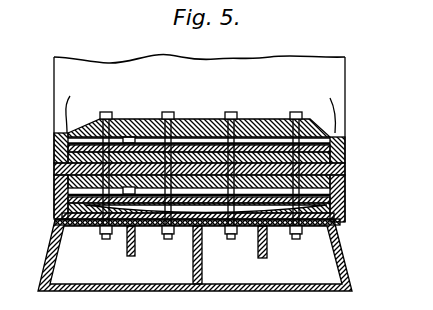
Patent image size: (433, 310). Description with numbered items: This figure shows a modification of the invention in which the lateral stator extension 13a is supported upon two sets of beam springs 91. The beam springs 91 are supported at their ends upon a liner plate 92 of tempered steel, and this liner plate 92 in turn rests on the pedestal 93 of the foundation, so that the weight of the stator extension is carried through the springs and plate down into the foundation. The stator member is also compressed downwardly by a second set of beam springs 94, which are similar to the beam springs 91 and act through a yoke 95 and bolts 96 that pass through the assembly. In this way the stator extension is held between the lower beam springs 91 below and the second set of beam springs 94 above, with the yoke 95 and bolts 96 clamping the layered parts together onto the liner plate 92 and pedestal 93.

The lateral stator extension 13a is at (345, 175).
The beam springs 91 is at (56, 191).
The liner plate 92 is at (330, 218).
The pedestal 93 is at (344, 266).
The second set of beam springs 94 is at (331, 136).
The yoke 95 is at (271, 118).
The bolts 96 is at (229, 118).